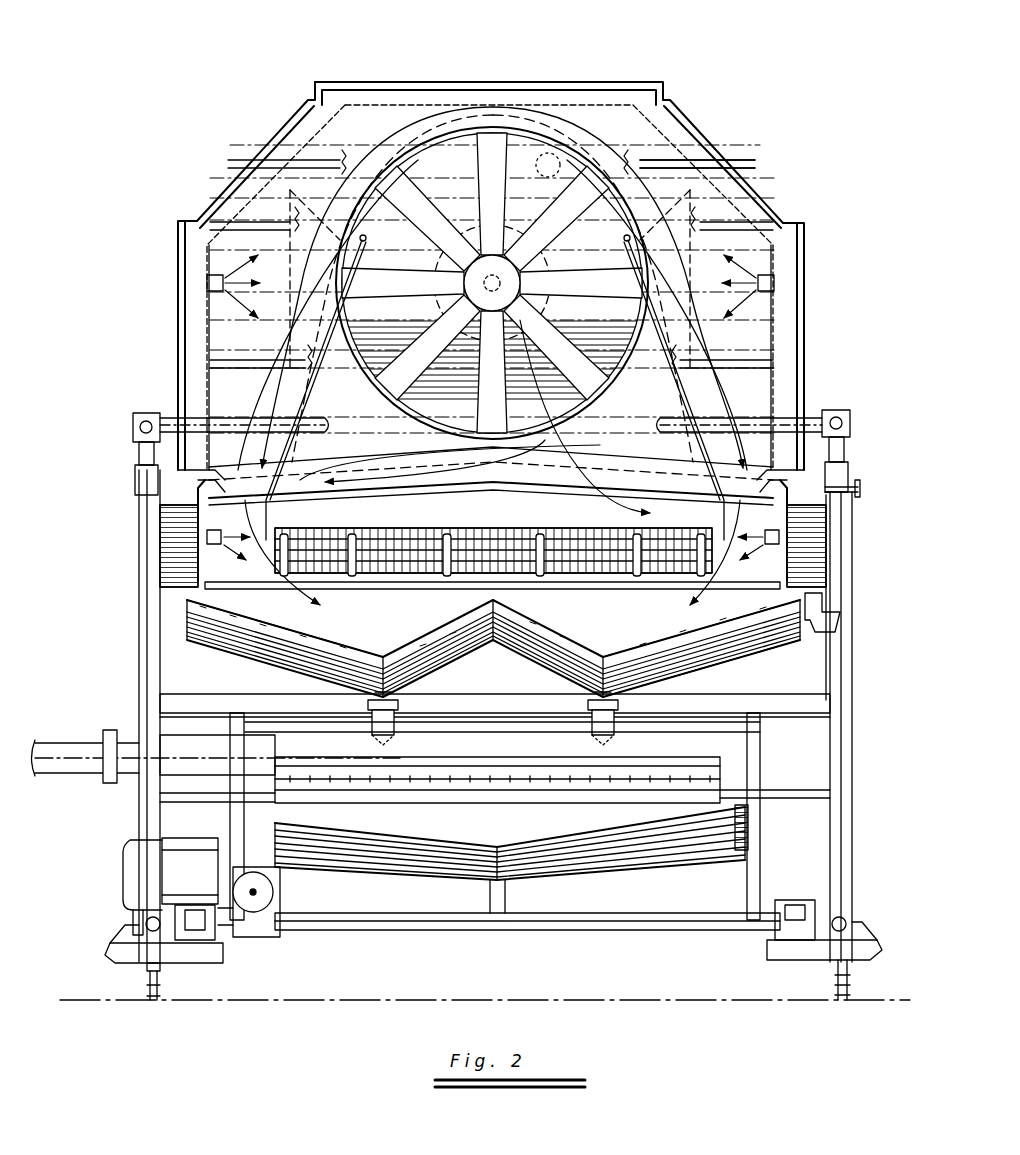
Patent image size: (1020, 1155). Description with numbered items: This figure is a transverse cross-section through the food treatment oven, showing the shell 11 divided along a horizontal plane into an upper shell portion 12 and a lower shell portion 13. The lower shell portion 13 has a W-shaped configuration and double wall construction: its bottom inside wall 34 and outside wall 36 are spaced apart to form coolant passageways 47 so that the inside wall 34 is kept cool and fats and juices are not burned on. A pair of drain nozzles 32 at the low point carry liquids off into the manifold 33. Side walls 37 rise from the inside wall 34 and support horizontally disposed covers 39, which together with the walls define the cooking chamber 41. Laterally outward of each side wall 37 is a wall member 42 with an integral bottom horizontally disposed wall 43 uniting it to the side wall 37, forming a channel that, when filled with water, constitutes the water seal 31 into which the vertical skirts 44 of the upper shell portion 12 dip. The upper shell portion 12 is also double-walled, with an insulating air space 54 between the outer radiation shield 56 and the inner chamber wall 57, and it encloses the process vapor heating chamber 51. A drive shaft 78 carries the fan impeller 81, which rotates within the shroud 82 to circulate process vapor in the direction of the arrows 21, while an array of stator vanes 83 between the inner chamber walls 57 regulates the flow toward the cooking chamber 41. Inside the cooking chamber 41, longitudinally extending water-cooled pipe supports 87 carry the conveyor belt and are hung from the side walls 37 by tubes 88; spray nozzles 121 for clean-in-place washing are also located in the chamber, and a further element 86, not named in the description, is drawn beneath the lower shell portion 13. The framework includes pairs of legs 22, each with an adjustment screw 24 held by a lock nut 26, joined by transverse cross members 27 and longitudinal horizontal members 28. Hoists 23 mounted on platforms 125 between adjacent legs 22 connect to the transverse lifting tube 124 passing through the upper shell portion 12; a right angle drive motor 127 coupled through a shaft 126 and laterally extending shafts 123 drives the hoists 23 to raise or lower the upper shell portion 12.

The shell 11 is at (636, 80).
The upper shell portion 12 is at (697, 122).
The lower shell portion 13 is at (864, 478).
The arrows 21 is at (493, 441).
The legs 22 is at (139, 641).
The hoists 23 is at (160, 545).
The adjustment screw 24 is at (162, 988).
The lock nut 26 is at (160, 975).
The cross members 27 is at (755, 715).
The longitudinally extending horizontal members 28 is at (150, 934).
The water seal 31 is at (857, 485).
The drain nozzles 32 is at (588, 703).
The manifold 33 is at (125, 735).
The inside wall 34 is at (342, 632).
The outside wall 36 is at (228, 660).
The side walls 37 is at (200, 560).
The covers 39 is at (530, 490).
The cooking chamber 41 is at (424, 518).
The wall member 42 is at (828, 545).
The bottom horizontally disposed wall 43 is at (842, 612).
The vertical skirts 44 is at (140, 498).
The coolant passageways 47 is at (700, 645).
The process vapor heating chamber 51 is at (628, 136).
The insulating air space 54 is at (186, 351).
The outer radiation shield 56 is at (178, 320).
The inner chamber wall 57 is at (208, 357).
The drive shaft 78 is at (522, 284).
The fan impeller 81 is at (492, 244).
The shroud 82 is at (416, 160).
The stator vanes 83 is at (680, 160).
The conveyor 86 is at (668, 560).
The pipe supports 87 is at (535, 540).
The tubes 88 is at (427, 590).
The spray nozzles 121 is at (207, 283).
The laterally extending shafts 123 is at (370, 915).
The lifting tube 124 is at (803, 403).
The platform 125 is at (218, 952).
The shaft 126 is at (258, 893).
The right angle drive motor 127 is at (190, 862).